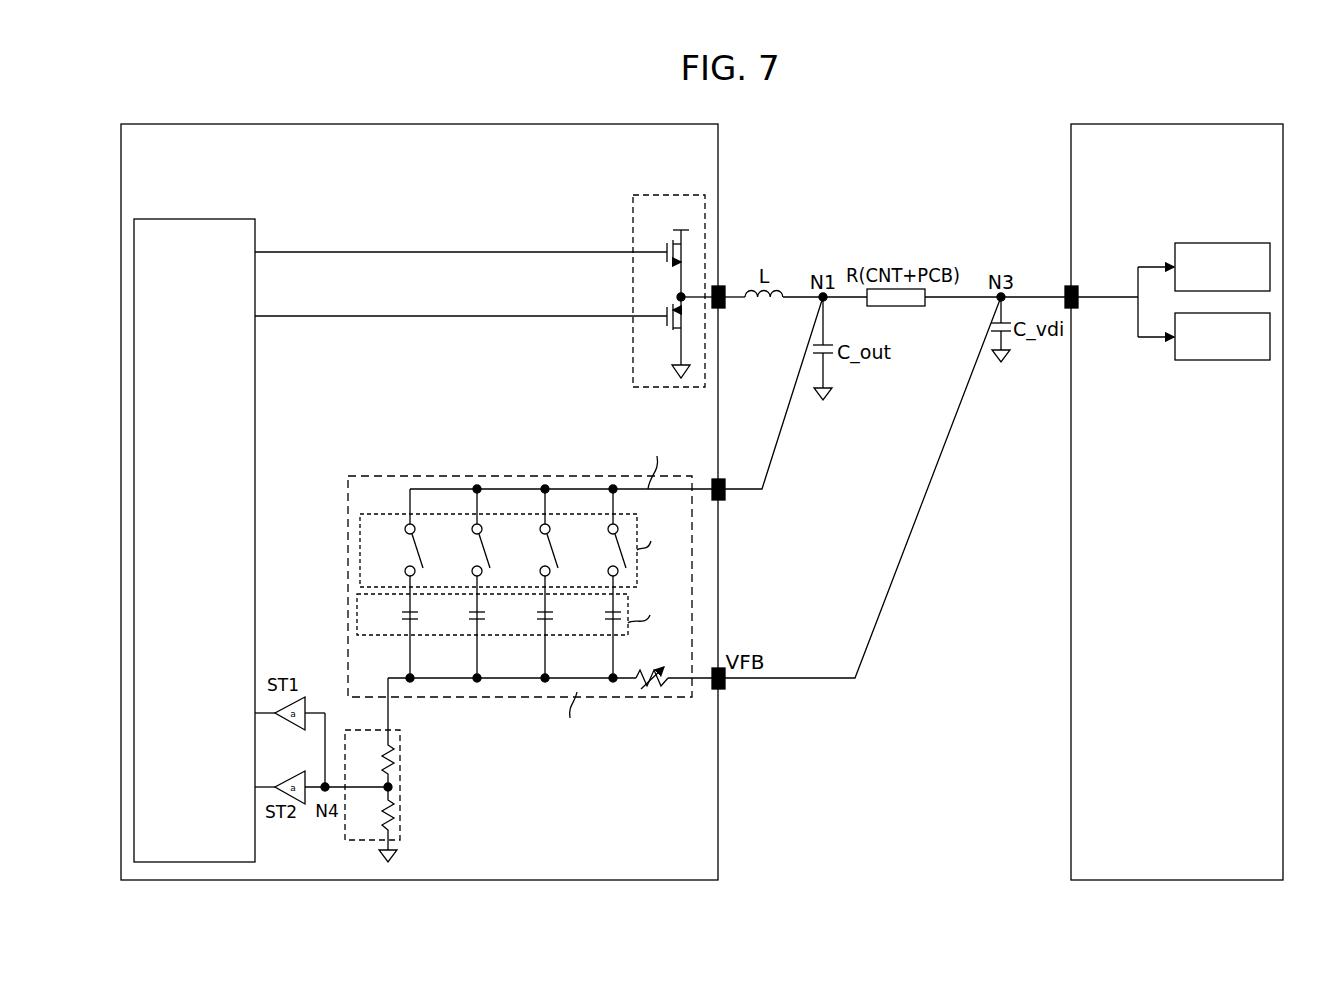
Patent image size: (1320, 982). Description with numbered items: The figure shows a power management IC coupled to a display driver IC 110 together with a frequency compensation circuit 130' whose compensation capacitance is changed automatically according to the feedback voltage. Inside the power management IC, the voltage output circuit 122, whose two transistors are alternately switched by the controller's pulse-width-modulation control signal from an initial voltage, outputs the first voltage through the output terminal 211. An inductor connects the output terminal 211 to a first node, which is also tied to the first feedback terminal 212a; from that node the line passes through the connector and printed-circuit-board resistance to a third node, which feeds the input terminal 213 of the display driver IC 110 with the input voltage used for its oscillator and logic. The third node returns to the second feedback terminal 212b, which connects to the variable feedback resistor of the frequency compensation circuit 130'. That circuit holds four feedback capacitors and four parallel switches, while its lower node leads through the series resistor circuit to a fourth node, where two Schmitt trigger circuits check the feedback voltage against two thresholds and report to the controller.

The display driver IC 110 is at (1147, 124).
The voltage output circuit 122 is at (678, 195).
The frequency compensation circuit 130' is at (530, 587).
The output terminal 211 is at (722, 288).
The first feedback terminal 212a is at (722, 500).
The second feedback terminal 212b is at (722, 689).
The input terminal 213 is at (1068, 286).